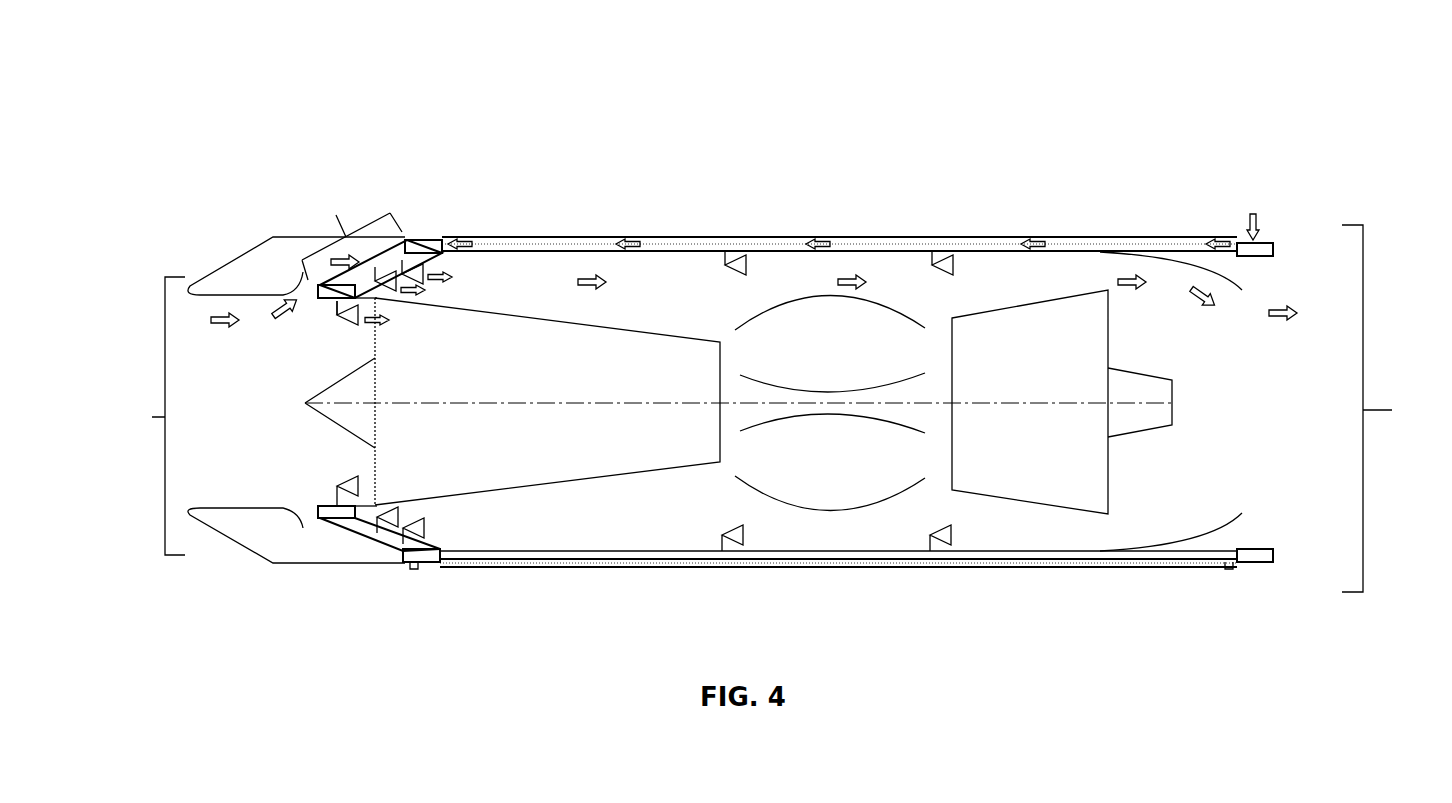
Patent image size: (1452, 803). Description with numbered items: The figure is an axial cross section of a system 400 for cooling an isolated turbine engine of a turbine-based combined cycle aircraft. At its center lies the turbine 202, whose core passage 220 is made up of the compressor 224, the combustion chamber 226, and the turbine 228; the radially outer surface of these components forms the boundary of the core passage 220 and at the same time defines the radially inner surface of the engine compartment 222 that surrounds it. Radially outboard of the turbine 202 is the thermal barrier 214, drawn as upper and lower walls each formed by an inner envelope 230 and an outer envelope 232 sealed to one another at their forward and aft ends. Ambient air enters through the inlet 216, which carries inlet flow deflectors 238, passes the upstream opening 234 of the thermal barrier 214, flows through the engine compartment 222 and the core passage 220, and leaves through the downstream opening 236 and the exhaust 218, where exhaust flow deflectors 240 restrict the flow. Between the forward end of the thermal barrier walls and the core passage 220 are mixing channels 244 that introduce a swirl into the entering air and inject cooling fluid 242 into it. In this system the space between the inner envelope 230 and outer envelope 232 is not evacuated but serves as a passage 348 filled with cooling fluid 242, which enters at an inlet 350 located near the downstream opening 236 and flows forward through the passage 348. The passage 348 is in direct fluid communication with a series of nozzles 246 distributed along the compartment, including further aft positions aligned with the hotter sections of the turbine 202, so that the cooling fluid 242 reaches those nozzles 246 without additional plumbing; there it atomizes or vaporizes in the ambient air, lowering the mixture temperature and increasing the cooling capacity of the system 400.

The system for cooling an isolated turbine engine 400 is at (177, 100).
The turbine 202 is at (1178, 527).
The thermal barrier 214 is at (703, 588).
The inlet 216 is at (150, 417).
The exhaust 218 is at (1397, 408).
The core passage 220 is at (363, 362).
The engine compartment 222 is at (668, 295).
The compressor 224 is at (543, 451).
The combustion chamber 226 is at (843, 359).
The turbine 228 is at (1046, 371).
The inner envelope 230 is at (541, 553).
The outer envelope 232 is at (1012, 563).
The upstream opening 234 is at (372, 240).
The downstream opening 236 is at (1267, 260).
The inlet flow deflectors 238 is at (287, 522).
The exhaust flow deflectors 240 is at (1238, 282).
The cooling fluid 242 is at (1257, 222).
The mixing channels 244 is at (383, 538).
The nozzles 246 is at (722, 535).
The passage 348 is at (990, 250).
The inlet 350 is at (1243, 243).